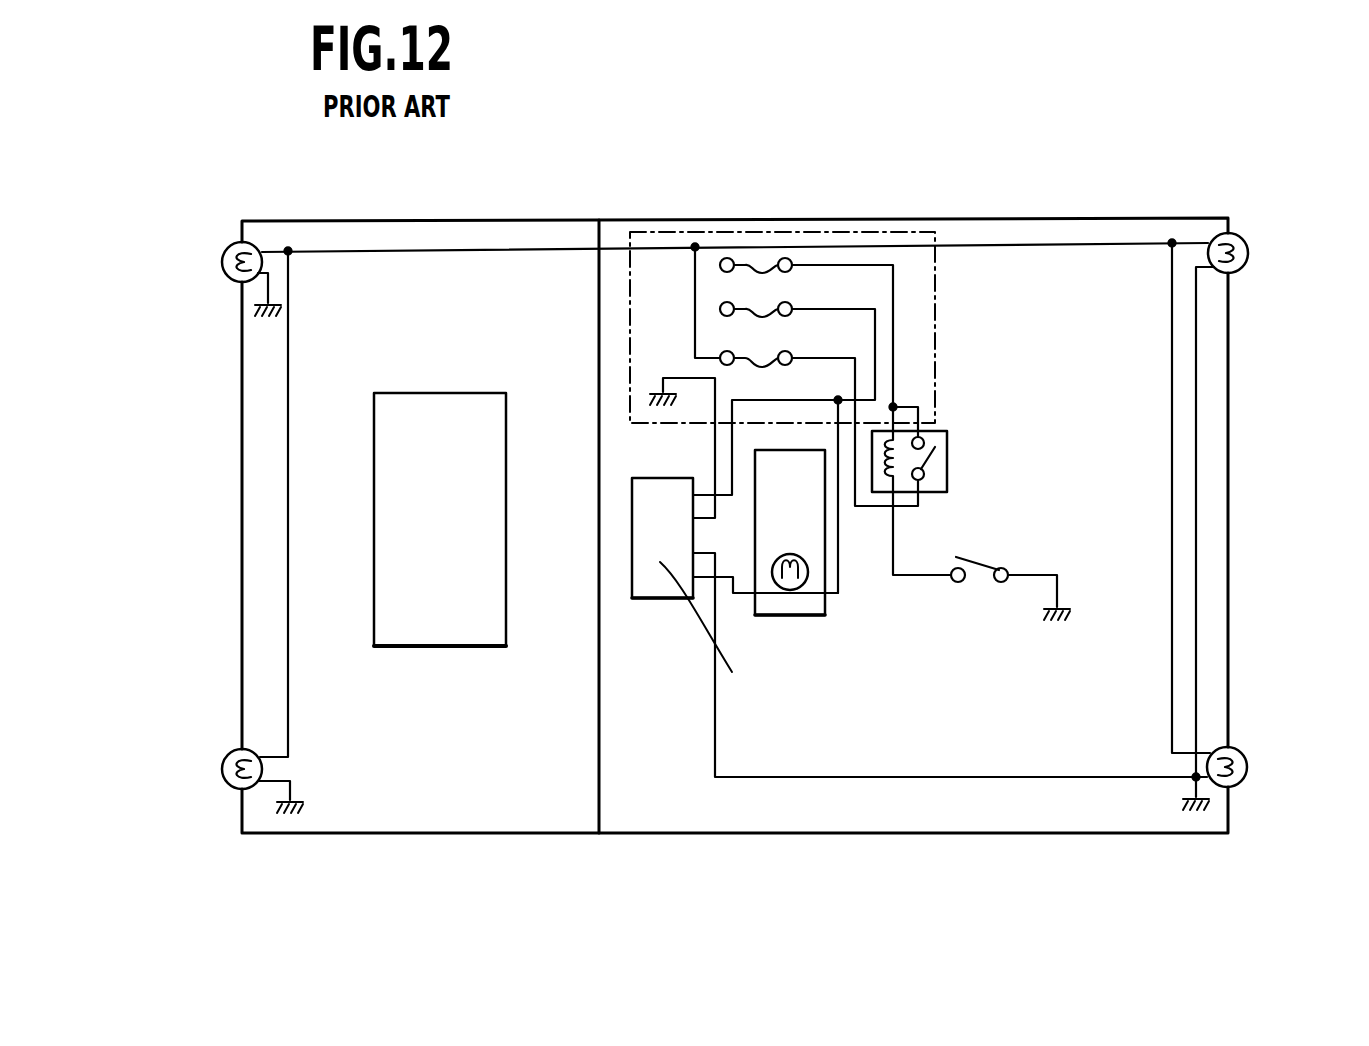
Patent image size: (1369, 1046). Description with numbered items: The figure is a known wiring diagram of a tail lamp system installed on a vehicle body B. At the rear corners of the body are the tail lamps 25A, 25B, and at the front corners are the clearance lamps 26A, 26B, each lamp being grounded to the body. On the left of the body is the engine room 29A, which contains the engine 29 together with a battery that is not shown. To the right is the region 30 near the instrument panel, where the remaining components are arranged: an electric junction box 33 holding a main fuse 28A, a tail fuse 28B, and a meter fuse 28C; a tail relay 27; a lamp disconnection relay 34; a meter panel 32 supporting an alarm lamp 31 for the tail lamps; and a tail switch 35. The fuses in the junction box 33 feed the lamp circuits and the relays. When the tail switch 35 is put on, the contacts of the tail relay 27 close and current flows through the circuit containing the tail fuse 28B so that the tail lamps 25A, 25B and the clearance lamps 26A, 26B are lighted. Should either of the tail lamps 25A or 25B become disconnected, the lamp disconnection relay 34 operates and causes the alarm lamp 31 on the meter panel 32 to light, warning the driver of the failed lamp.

The vehicle body B is at (1012, 838).
The tail lamp 25A is at (1247, 243).
The tail lamp 25B is at (1247, 758).
The clearance lamp 26A is at (224, 258).
The clearance lamp 26B is at (222, 769).
The tail relay 27 is at (948, 445).
The main fuse 28A is at (746, 262).
The tail fuse 28B is at (745, 358).
The meter fuse 28C is at (745, 308).
The engine 29 is at (433, 648).
The engine room 29A is at (473, 818).
The region near an instrument panel 30 is at (652, 807).
The alarm lamp 31 is at (808, 563).
The meter panel 32 is at (808, 618).
The electric junction box 33 is at (936, 370).
The lamp disconnection relay 34 is at (632, 588).
The tail switch 35 is at (984, 567).